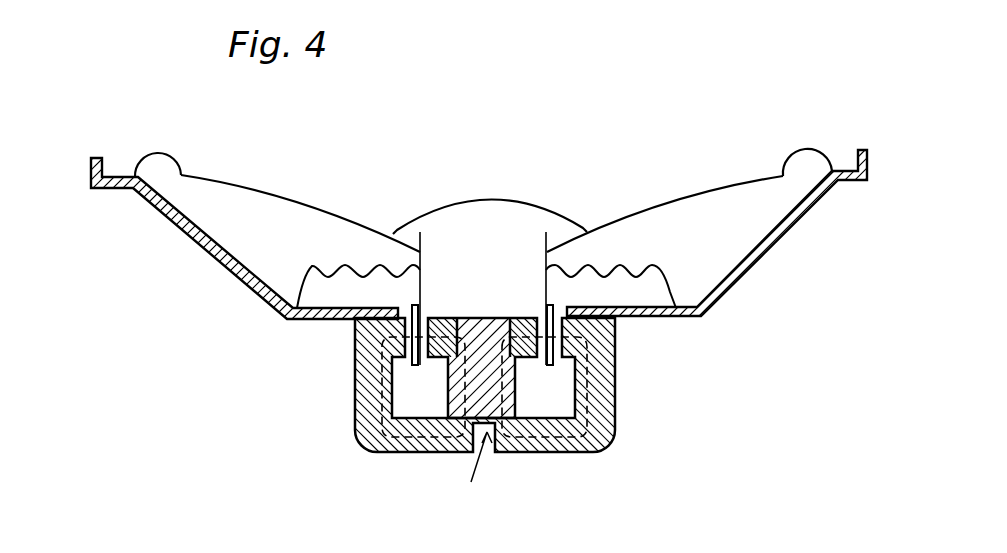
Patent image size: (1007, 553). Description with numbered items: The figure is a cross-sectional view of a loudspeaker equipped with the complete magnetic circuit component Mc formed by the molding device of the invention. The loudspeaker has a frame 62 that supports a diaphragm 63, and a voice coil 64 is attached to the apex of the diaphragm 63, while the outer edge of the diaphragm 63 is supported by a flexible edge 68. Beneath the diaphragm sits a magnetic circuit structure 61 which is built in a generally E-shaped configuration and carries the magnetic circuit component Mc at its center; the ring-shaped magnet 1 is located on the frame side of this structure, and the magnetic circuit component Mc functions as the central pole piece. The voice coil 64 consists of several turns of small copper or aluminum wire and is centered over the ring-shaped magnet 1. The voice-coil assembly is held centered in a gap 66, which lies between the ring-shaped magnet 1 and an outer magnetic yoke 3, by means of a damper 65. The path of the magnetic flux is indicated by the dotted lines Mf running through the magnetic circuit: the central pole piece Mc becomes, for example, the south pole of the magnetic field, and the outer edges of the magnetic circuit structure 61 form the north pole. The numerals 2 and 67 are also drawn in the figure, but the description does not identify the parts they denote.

The ring-shaped magnet 1 is at (437, 358).
The magnet 2 is at (487, 318).
The outer magnetic yoke 3 is at (482, 300).
The magnetic circuit structure 61 is at (613, 390).
The frame 62 is at (703, 303).
The diaphragm 63 is at (272, 188).
The voice coil 64 is at (373, 332).
The damper 65 is at (318, 268).
The gap 66 is at (548, 365).
The dust cap 67 is at (552, 222).
The flexible edge 68 is at (817, 154).
The magnetic flux Mf is at (592, 345).
The magnetic circuit component Mc is at (455, 469).